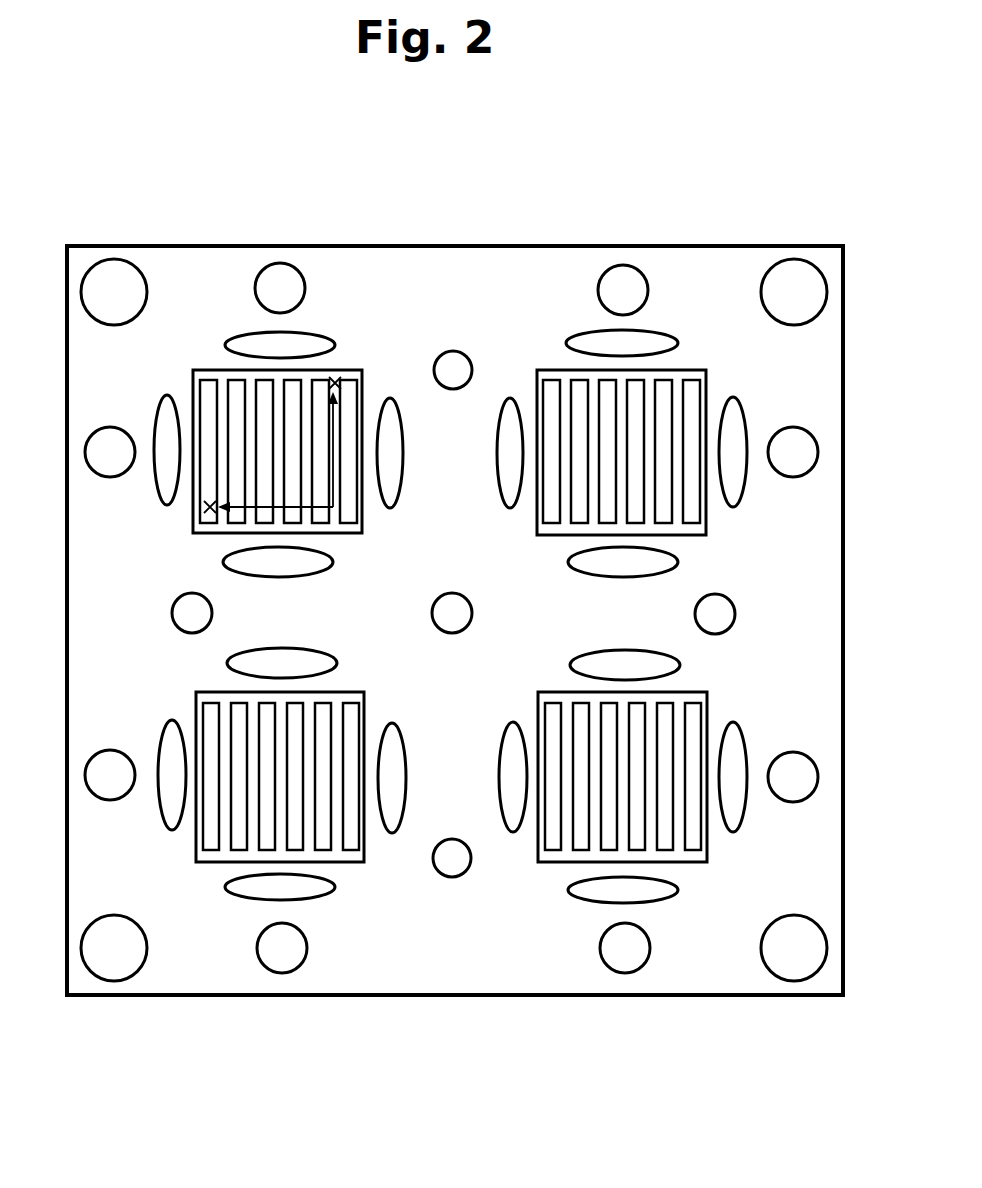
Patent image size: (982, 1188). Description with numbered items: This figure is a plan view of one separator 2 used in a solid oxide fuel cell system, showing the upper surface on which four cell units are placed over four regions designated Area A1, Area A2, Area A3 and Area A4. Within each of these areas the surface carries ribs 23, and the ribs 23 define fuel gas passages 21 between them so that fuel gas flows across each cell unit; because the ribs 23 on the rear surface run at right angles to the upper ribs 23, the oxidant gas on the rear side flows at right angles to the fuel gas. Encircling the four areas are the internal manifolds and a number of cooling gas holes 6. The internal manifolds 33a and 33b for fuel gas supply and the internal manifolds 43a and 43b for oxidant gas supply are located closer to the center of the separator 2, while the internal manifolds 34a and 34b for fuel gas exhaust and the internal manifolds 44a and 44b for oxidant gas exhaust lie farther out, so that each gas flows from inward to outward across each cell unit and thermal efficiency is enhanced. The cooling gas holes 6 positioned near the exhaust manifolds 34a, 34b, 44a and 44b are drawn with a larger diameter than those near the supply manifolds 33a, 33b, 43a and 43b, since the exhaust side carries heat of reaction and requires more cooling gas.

The separator 2 is at (207, 240).
The cooling gas holes 6 is at (785, 292).
The fuel gas passages 21 is at (714, 813).
The ribs 23 is at (693, 838).
The internal manifold for fuel gas supply 33a is at (660, 665).
The internal manifold for fuel gas supply 33b is at (247, 665).
The internal manifold for fuel gas exhaust 34a is at (610, 890).
The internal manifold for fuel gas exhaust 34b is at (297, 343).
The internal manifold for oxidant gas supply 43a is at (510, 813).
The internal manifold for oxidant gas supply 43b is at (393, 418).
The internal manifold for oxidant gas exhaust 44a is at (737, 750).
The internal manifold for oxidant gas exhaust 44b is at (170, 752).
The Area A1 is at (704, 820).
The Area A2 is at (350, 874).
The Area A3 is at (552, 546).
The Area A4 is at (344, 545).